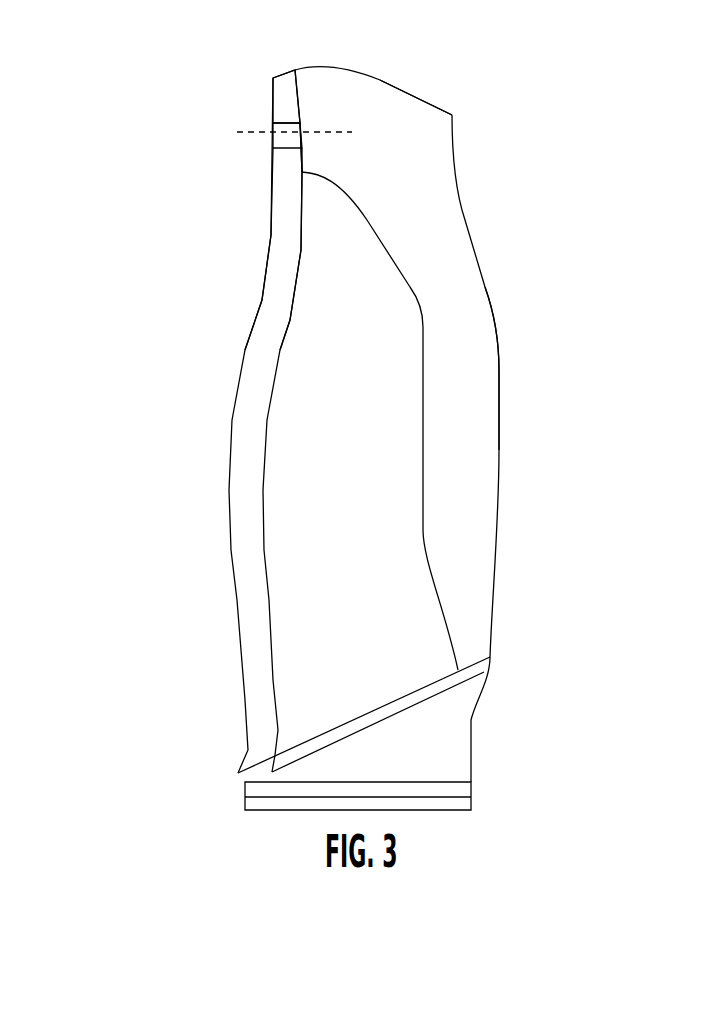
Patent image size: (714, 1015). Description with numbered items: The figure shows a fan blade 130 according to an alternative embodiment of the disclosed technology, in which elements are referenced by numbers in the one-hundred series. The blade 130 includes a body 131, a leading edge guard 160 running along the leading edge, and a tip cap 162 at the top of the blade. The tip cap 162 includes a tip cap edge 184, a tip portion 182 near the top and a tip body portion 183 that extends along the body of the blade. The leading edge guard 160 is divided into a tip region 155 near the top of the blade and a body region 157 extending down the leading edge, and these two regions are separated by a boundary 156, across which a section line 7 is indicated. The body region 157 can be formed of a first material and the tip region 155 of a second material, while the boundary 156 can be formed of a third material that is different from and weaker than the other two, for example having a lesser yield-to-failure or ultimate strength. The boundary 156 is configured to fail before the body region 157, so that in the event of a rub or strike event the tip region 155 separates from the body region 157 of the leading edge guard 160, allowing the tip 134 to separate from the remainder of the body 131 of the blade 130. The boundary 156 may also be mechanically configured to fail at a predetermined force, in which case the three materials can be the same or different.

The section line 7- 7 is at (232, 132).
The blade 130 is at (207, 612).
The body 131 is at (310, 627).
The tip 134 is at (340, 67).
The tip region 155 is at (282, 107).
The boundary 156 is at (287, 144).
The body region 157 is at (278, 262).
The leading edge guard 160 is at (171, 205).
The tip cap 162 is at (519, 394).
The tip portion 182 is at (372, 138).
The tip body portion 183 is at (475, 322).
The tip cap edge 184 is at (300, 103).